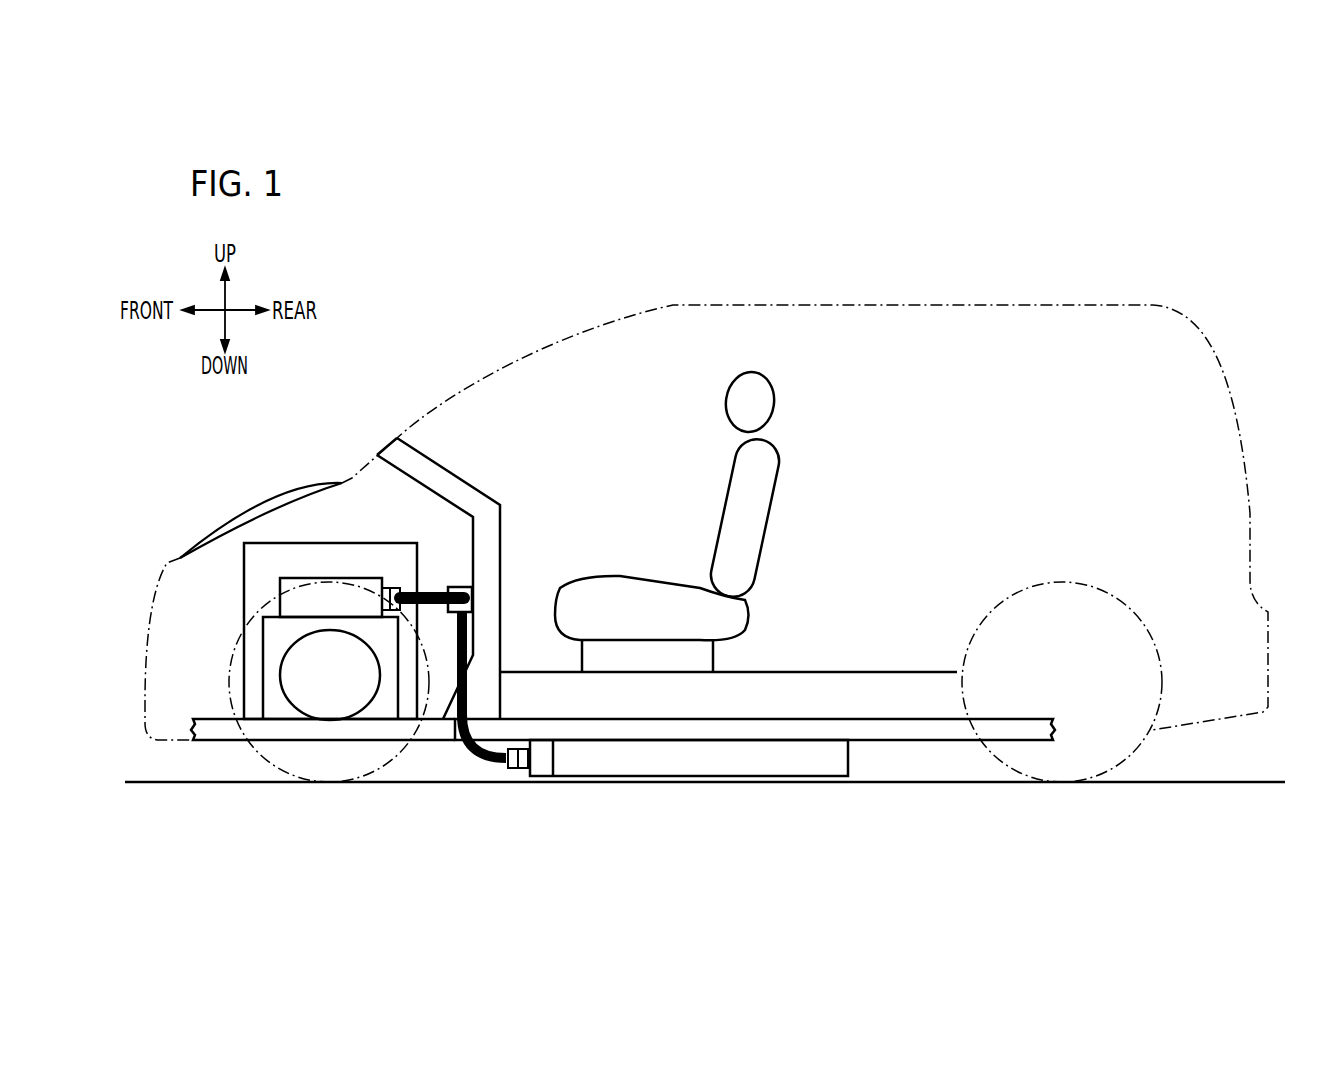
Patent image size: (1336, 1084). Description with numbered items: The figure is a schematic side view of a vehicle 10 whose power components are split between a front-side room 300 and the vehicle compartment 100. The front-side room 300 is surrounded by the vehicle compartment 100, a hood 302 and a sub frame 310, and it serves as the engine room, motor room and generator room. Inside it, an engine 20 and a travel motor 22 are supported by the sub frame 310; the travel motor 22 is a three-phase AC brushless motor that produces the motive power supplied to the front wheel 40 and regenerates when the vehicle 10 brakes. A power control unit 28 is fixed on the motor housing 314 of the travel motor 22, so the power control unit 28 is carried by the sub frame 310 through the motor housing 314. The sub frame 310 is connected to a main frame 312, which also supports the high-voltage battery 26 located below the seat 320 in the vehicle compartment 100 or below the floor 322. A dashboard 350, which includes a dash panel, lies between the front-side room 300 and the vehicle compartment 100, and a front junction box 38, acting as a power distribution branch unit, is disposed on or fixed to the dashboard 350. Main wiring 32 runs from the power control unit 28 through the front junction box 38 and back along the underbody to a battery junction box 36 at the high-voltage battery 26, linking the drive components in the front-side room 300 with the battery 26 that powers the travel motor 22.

The vehicle 10 is at (441, 245).
The engine 20 is at (370, 543).
The travel motor 22 is at (313, 710).
The high-voltage battery 26 is at (810, 770).
The power control unit 28 is at (280, 595).
The main wiring 32 is at (436, 592).
The battery junction box 36 is at (540, 770).
The front junction box 38 is at (463, 587).
The front wheel 40 is at (265, 757).
The vehicle compartment 100 is at (625, 357).
The front-side room 300 is at (287, 527).
The hood 302 is at (292, 492).
The sub frame 310 is at (208, 718).
The main frame 312 is at (958, 742).
The motor housing 314 is at (277, 640).
The seat 320 is at (773, 452).
The floor 322 is at (878, 672).
The dashboard 350 is at (475, 485).